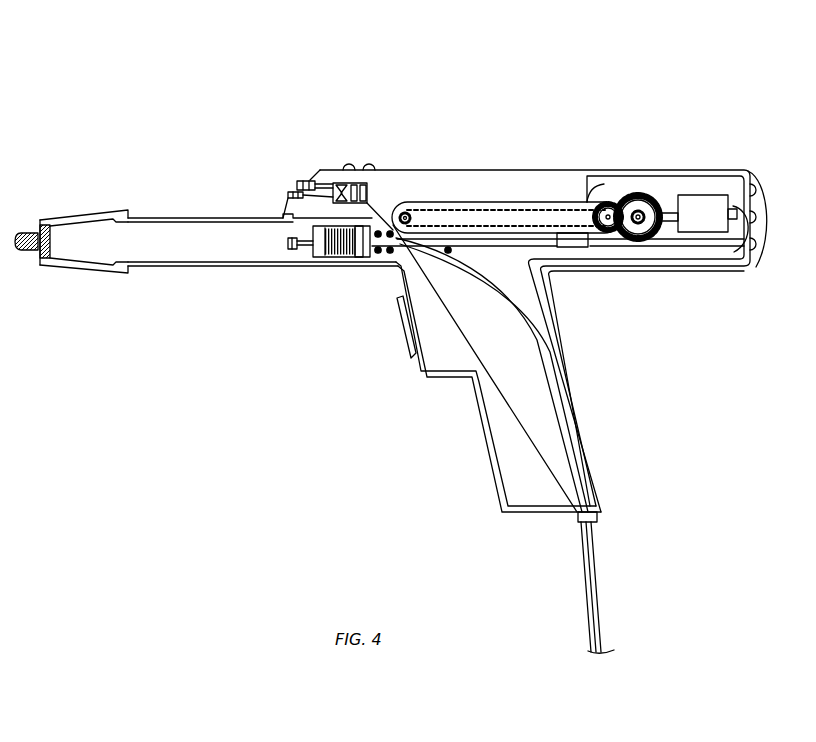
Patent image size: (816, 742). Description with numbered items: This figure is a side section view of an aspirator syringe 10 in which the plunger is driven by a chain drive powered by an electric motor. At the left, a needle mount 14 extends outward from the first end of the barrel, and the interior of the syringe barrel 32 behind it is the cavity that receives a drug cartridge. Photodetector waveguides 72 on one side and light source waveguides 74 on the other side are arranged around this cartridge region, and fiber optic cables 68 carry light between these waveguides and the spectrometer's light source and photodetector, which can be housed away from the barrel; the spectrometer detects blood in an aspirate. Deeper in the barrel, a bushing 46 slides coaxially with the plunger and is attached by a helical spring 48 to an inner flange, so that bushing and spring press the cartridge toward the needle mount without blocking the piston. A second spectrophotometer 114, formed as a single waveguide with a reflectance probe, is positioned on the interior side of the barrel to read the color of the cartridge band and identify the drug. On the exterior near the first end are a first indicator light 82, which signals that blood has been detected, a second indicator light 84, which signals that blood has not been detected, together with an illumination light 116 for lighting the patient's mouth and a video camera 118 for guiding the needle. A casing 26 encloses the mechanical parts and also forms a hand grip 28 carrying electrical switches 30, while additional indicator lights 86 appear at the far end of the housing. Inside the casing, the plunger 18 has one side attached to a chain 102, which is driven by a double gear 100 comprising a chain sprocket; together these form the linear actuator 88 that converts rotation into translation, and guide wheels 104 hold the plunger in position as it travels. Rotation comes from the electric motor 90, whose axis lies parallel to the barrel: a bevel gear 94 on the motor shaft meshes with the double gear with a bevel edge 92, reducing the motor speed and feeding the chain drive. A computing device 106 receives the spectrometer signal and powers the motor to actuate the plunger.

The aspirator syringe 10 is at (117, 62).
The needle mount 14 is at (33, 222).
The photodetector waveguides 72 is at (113, 215).
The light source waveguides 74 is at (108, 268).
The fiber optic cables 68 is at (190, 265).
The interior of the syringe barrel 32 is at (257, 255).
The bushing 46 is at (318, 253).
The spring 48 is at (335, 257).
The guide wheels 104 is at (365, 257).
The second spectrophotometer 114 is at (267, 217).
The illumination light 116 is at (283, 190).
The video camera 118 is at (300, 181).
The computing device 106 is at (340, 183).
The first indicator light 82 is at (349, 170).
The second indicator light 84 is at (368, 170).
The casing 26 is at (427, 177).
The additional indicator lights 86 is at (762, 190).
The chain 102 is at (498, 202).
The double gear 100 is at (618, 203).
The linear actuator 88 is at (604, 185).
The double gear with a bevel edge 92 is at (638, 236).
The bevel gear 94 is at (671, 225).
The electric motor 90 is at (720, 225).
The plunger 18 is at (560, 240).
The electrical switches 30 is at (410, 345).
The hand grip 28 is at (485, 437).